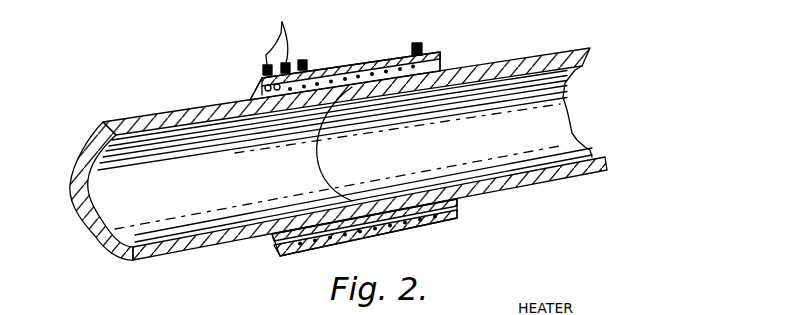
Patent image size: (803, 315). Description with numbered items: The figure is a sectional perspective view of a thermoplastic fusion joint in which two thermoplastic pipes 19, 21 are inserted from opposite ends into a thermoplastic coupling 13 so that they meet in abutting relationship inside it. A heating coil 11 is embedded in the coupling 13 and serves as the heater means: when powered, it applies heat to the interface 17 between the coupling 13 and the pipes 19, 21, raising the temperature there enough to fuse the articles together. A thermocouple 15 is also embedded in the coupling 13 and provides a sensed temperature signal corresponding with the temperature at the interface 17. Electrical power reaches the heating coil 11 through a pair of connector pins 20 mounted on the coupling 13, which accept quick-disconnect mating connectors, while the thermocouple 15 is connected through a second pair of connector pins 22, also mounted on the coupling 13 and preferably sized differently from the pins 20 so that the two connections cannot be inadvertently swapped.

The heating coil 11 is at (353, 86).
The thermoplastic coupling 13 is at (422, 224).
The thermocouple 15 is at (260, 80).
The interface 17 is at (242, 91).
The pipe 19 is at (542, 183).
The connector pins 20 is at (302, 60).
The pipe 21 is at (167, 259).
The connector pins 22 is at (279, 37).